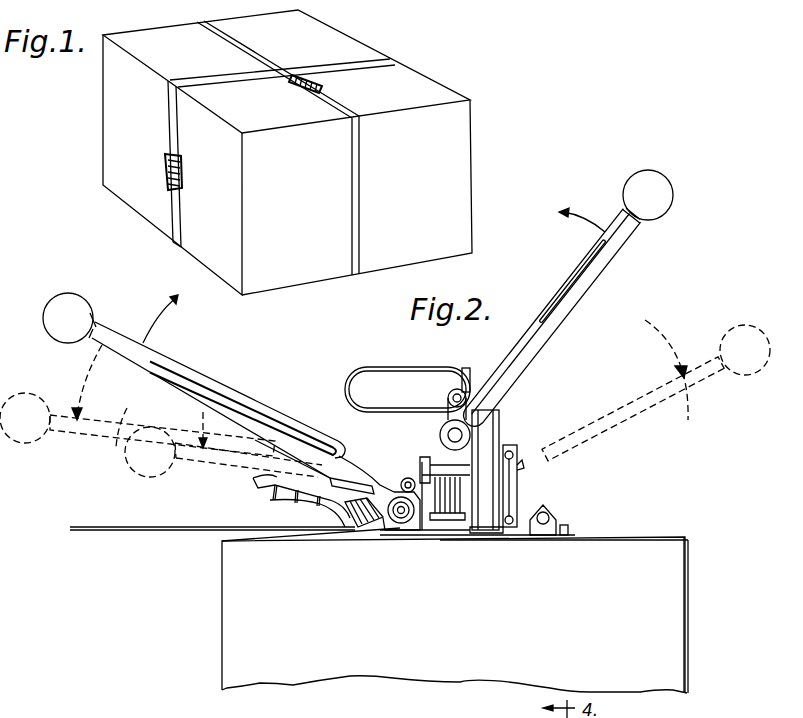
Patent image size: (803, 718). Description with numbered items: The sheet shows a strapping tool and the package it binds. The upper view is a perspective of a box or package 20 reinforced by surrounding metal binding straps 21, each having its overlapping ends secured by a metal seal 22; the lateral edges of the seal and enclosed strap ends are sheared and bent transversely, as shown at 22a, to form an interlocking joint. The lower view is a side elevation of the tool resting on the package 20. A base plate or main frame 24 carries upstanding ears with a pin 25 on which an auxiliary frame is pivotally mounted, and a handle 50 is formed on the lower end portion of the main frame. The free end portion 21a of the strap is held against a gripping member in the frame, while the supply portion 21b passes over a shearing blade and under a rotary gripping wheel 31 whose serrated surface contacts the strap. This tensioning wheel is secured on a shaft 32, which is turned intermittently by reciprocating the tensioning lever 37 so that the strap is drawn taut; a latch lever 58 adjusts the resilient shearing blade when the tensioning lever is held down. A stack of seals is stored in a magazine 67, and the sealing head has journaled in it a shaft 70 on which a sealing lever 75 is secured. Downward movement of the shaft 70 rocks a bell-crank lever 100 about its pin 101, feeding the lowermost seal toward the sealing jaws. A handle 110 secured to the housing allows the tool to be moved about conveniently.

In FIG. 1, the box or package 20 is at (418, 88).
In FIG. 2, the box or package 20 is at (592, 627).
In FIG. 1, the metal binding strap 21 is at (360, 60).
In FIG. 2, the metal binding strap 21 is at (690, 603).
In FIG. 2, the free end portion of the strap 21a is at (340, 540).
In FIG. 2, the supply portion of the strap 21b is at (178, 532).
In FIG. 1, the metal seal 22 is at (295, 85).
In FIG. 1, the deflected portions of the seal 22a is at (165, 162).
In FIG. 2, the base plate or main frame 24 is at (437, 537).
In FIG. 2, the pin 25 is at (386, 532).
In FIG. 2, the rotary gripping wheel 31 is at (372, 530).
In FIG. 2, the shaft 32 is at (401, 497).
In FIG. 2, the tensioning lever 37 is at (177, 380).
In FIG. 2, the handle 50 is at (283, 502).
In FIG. 2, the latch lever 58 is at (348, 483).
In FIG. 2, the magazine 67 is at (483, 440).
In FIG. 2, the shaft 70 is at (440, 435).
In FIG. 2, the sealing lever 75 is at (540, 343).
In FIG. 2, the bell-crank lever 100 is at (518, 490).
In FIG. 2, the pin 101 is at (513, 452).
In FIG. 2, the handle 110 is at (356, 372).